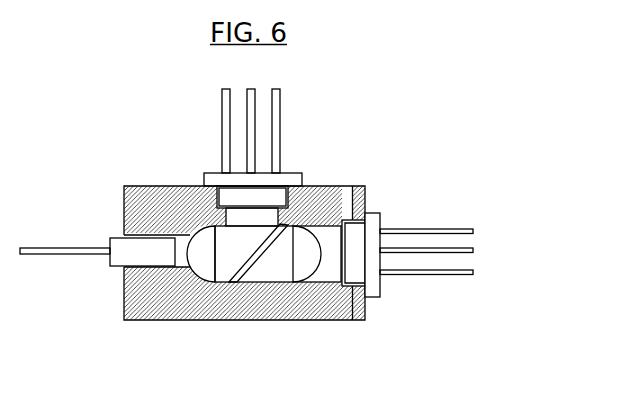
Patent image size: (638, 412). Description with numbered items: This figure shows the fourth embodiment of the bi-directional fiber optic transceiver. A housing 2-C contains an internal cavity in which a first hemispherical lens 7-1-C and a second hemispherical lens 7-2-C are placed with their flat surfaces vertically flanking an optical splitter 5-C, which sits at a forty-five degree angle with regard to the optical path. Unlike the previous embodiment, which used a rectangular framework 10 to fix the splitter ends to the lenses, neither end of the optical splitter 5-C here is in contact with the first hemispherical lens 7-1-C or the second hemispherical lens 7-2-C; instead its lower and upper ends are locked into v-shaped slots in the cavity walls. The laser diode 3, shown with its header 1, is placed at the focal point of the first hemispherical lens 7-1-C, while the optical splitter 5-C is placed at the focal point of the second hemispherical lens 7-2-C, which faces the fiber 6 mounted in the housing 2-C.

The header with lead pins 1 is at (268, 180).
The rectangular framework 10 is at (283, 255).
The housing 2-C is at (128, 219).
The second hemispherical lens 7-2-C is at (200, 226).
The first hemispherical lens 7-1-C is at (303, 271).
The optical splitter 5-C is at (248, 280).
The optical fiber ferrule 6 is at (117, 254).
The laser diode 3 is at (373, 278).